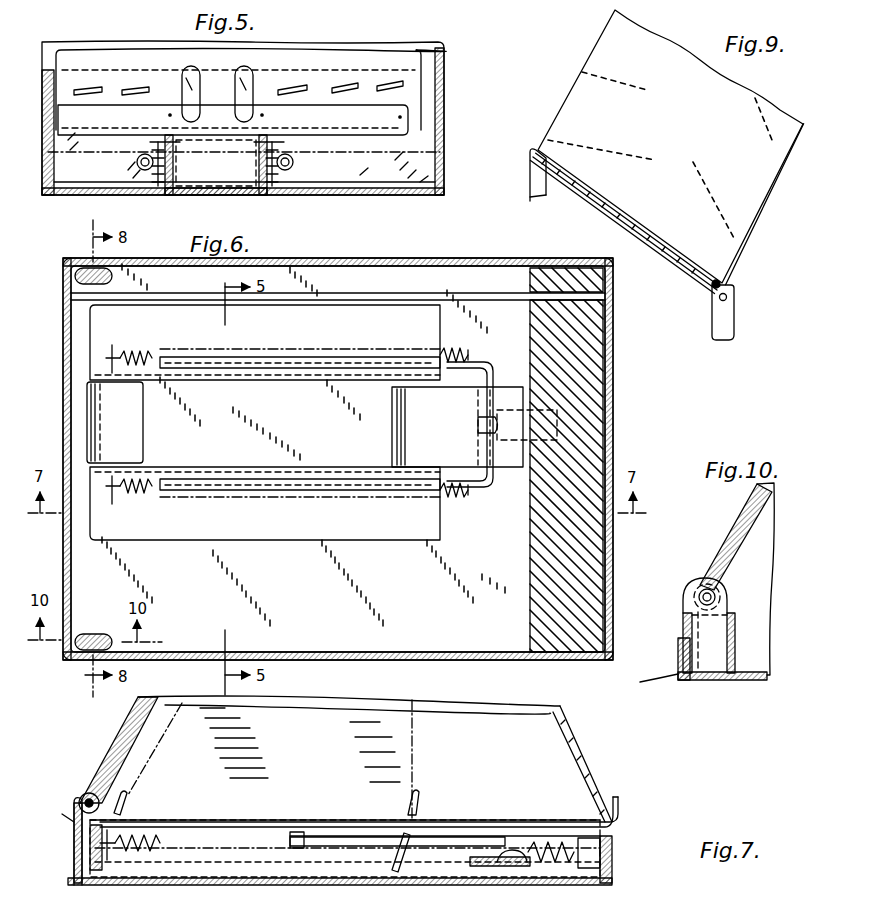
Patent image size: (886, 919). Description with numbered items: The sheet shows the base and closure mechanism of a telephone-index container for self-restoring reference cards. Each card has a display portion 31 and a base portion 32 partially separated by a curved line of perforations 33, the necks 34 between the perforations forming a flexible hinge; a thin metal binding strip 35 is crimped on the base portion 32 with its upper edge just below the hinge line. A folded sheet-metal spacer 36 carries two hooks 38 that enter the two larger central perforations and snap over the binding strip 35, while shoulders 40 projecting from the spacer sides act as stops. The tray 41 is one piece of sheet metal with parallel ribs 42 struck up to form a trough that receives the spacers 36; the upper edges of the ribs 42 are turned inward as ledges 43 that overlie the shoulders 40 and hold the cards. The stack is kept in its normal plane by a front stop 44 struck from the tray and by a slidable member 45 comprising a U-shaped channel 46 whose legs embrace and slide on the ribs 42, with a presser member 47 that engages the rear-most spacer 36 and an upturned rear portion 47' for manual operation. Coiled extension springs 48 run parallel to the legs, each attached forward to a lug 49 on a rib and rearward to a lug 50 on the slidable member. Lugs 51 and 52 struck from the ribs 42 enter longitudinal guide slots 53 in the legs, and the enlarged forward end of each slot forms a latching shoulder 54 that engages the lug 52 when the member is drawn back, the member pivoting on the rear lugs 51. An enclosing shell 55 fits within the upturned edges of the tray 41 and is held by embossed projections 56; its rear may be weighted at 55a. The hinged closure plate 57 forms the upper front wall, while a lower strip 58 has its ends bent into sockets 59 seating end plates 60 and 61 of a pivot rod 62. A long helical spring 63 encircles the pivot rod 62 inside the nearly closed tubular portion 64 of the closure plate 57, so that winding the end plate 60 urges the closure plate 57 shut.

In FIG. 5, the display portion 31 is at (412, 58).
In FIG. 5, the base portion 32 is at (412, 108).
In FIG. 5, the line of perforations 33 is at (395, 85).
In FIG. 5, the necks 34 is at (358, 85).
In FIG. 5, the binding strip 35 is at (372, 125).
In FIG. 5, the spacer 36 is at (183, 192).
In FIG. 5, the hooks 38 is at (250, 110).
In FIG. 5, the shoulders 40 is at (172, 135).
In FIG. 5, the tray 41 is at (450, 170).
In FIG. 6, the tray 41 is at (614, 375).
In FIG. 10, the tray 41 is at (702, 673).
In FIG. 7, the tray 41 is at (612, 876).
In FIG. 5, the ribs 42 is at (283, 170).
In FIG. 7, the ribs 42 is at (150, 830).
In FIG. 5, the ledges 43 is at (252, 138).
In FIG. 6, the ledges 43 is at (205, 466).
In FIG. 7, the ledges 43 is at (210, 820).
In FIG. 6, the front stop 44 is at (100, 416).
In FIG. 7, the front stop 44 is at (90, 845).
In FIG. 6, the slidable member 45 is at (492, 355).
In FIG. 7, the slidable member 45 is at (466, 818).
In FIG. 5, the channel 46 is at (140, 170).
In FIG. 6, the channel 46 is at (368, 490).
In FIG. 6, the presser member 47 is at (443, 427).
In FIG. 7, the presser member 47 is at (529, 820).
In FIG. 7, the upturned rear portion 47' is at (643, 805).
In FIG. 5, the coiled extension springs 48 is at (286, 162).
In FIG. 6, the coiled extension springs 48 is at (135, 350).
In FIG. 7, the coiled extension springs 48 is at (135, 855).
In FIG. 6, the lug 49 is at (106, 358).
In FIG. 7, the lug 49 is at (115, 840).
In FIG. 5, the lug 50 is at (165, 160).
In FIG. 6, the lug 50 is at (458, 353).
In FIG. 7, the lug 50 is at (605, 838).
In FIG. 6, the lug 51 is at (378, 360).
In FIG. 7, the lug 51 is at (382, 870).
In FIG. 6, the lug 52 is at (283, 358).
In FIG. 7, the lug 52 is at (283, 848).
In FIG. 7, the guide slots 53 is at (298, 835).
In FIG. 7, the latching shoulder 54 is at (300, 848).
In FIG. 5, the shell 55 is at (445, 128).
In FIG. 6, the shell 55 is at (462, 262).
In FIG. 10, the shell 55 is at (767, 537).
In FIG. 6, the weight 55a is at (612, 455).
In FIG. 6, the projections 56 is at (325, 265).
In FIG. 7, the projections 56 is at (605, 862).
In FIG. 9, the closure plate 57 is at (606, 30).
In FIG. 10, the closure plate 57 is at (735, 545).
In FIG. 7, the closure plate 57 is at (130, 740).
In FIG. 6, the strip 58 is at (71, 565).
In FIG. 6, the sockets 59 is at (112, 276).
In FIG. 10, the sockets 59 is at (735, 652).
In FIG. 9, the end plate 60 is at (532, 183).
In FIG. 6, the end plate 60 is at (78, 282).
In FIG. 7, the end plate 60 is at (53, 812).
In FIG. 9, the end plate 61 is at (736, 310).
In FIG. 6, the end plate 61 is at (95, 634).
In FIG. 9, the pivot rod 62 is at (727, 296).
In FIG. 10, the pivot rod 62 is at (715, 597).
In FIG. 7, the pivot rod 62 is at (126, 798).
In FIG. 9, the helical spring 63 is at (712, 290).
In FIG. 9, the tubular portion 64 is at (672, 268).
In FIG. 10, the tubular portion 64 is at (694, 592).
In FIG. 7, the tubular portion 64 is at (84, 794).